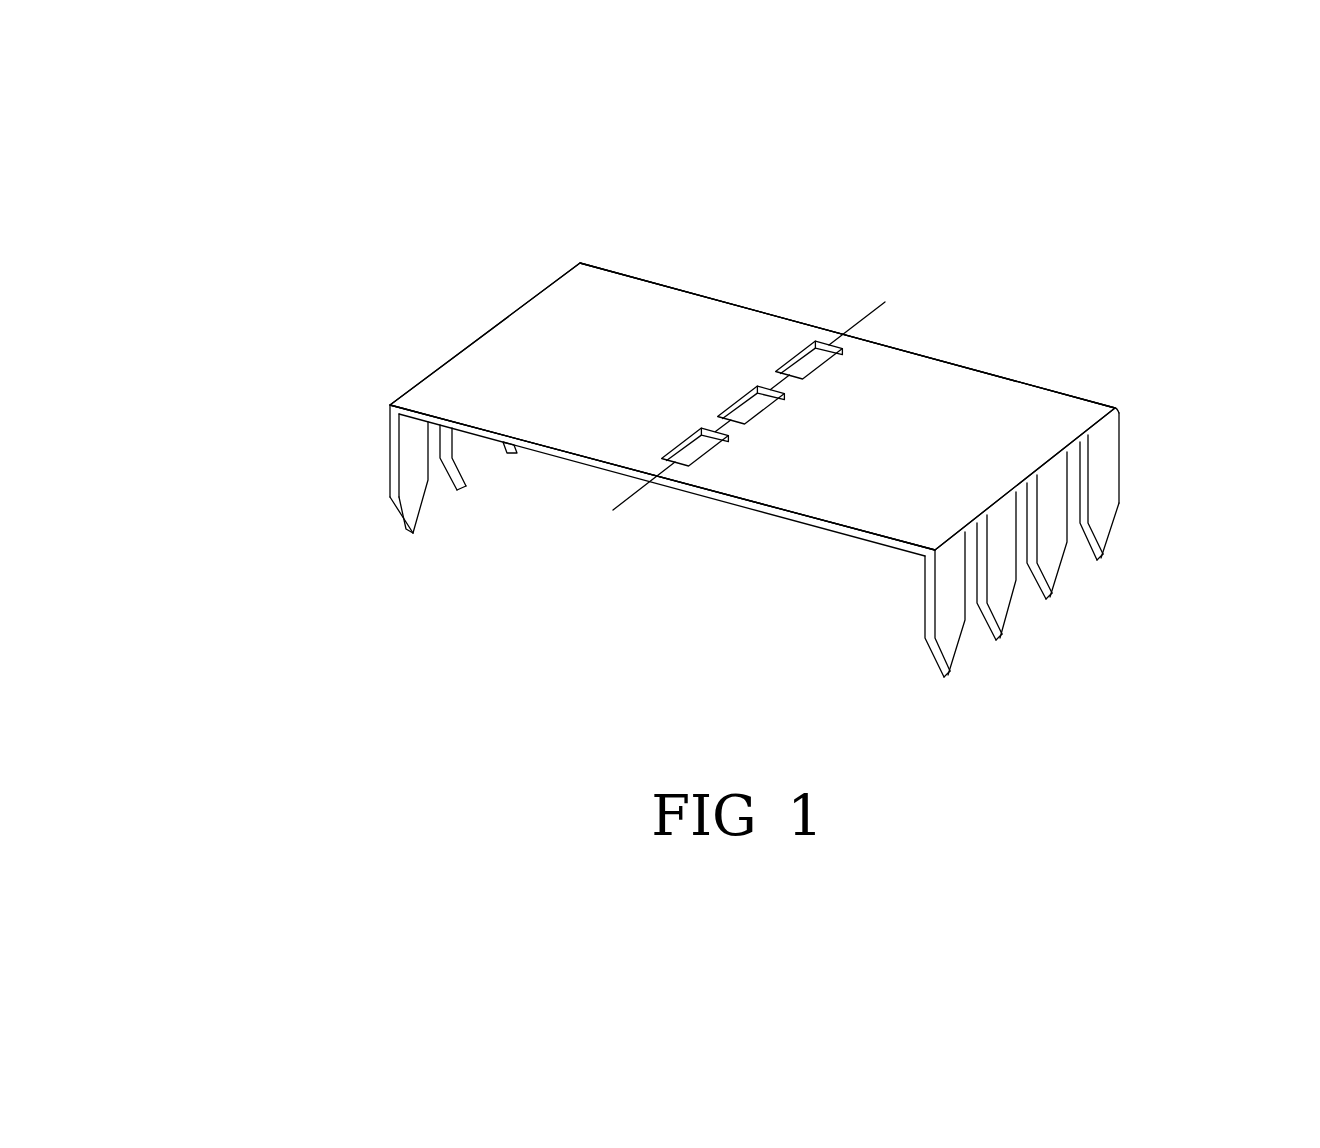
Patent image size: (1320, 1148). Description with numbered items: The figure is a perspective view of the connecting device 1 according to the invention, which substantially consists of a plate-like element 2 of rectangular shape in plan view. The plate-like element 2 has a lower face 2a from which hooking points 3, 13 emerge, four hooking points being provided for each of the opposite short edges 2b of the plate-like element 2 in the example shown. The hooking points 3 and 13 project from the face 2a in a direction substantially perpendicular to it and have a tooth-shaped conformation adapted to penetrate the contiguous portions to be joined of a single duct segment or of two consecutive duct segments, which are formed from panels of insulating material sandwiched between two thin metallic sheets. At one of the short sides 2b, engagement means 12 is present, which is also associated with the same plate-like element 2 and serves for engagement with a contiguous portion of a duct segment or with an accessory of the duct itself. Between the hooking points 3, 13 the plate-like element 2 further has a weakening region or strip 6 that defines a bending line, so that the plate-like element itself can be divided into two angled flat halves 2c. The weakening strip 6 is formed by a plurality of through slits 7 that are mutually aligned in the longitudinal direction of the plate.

The connecting device 1 is at (645, 203).
The plate-like element 2 is at (487, 303).
The lower face 2a is at (605, 467).
The end / short side 2b is at (412, 388).
The angled flat halves 2c is at (591, 371).
The hooking point 3 is at (1052, 548).
The weakening region or strip 6 is at (867, 317).
The through slits 7 is at (830, 366).
The engagement means 12 is at (373, 523).
The hooking point 13 is at (462, 452).